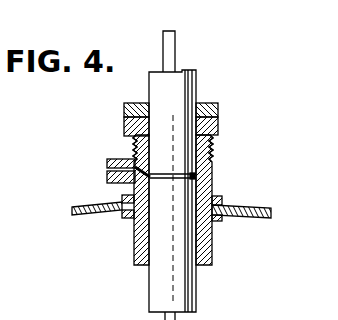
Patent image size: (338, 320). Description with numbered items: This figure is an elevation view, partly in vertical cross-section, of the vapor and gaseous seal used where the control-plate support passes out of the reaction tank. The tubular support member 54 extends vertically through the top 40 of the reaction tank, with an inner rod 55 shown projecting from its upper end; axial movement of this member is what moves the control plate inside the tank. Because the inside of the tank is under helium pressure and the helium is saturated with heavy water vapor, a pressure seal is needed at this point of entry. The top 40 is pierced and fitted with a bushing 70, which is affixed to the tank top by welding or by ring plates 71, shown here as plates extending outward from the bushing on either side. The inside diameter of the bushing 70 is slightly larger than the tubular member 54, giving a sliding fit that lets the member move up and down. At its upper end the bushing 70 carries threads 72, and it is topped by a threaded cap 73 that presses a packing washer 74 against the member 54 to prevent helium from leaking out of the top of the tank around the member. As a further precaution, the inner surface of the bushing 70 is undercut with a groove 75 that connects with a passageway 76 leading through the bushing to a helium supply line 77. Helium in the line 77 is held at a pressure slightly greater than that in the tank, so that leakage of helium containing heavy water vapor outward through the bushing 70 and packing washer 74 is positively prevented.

The top of the reaction tank 40 is at (90, 218).
The tubular support member 54 is at (189, 82).
The rod 55 is at (175, 43).
The bushing 70 is at (210, 158).
The ring plates 71 is at (225, 197).
The threads 72 is at (211, 142).
The threaded cap 73 is at (218, 110).
The packing washer 74 is at (218, 119).
The groove 75 is at (212, 176).
The passageway 76 is at (127, 186).
The helium supply line 77 is at (118, 158).